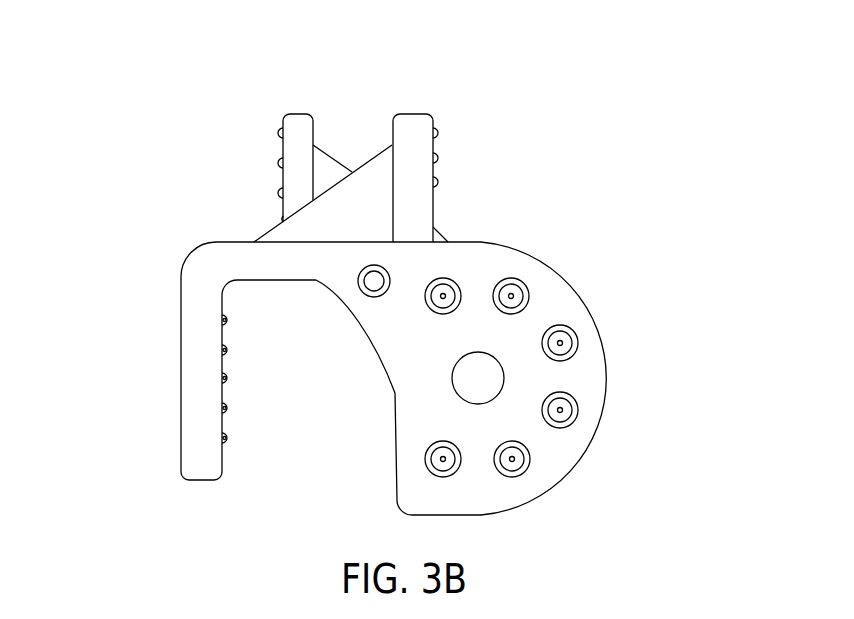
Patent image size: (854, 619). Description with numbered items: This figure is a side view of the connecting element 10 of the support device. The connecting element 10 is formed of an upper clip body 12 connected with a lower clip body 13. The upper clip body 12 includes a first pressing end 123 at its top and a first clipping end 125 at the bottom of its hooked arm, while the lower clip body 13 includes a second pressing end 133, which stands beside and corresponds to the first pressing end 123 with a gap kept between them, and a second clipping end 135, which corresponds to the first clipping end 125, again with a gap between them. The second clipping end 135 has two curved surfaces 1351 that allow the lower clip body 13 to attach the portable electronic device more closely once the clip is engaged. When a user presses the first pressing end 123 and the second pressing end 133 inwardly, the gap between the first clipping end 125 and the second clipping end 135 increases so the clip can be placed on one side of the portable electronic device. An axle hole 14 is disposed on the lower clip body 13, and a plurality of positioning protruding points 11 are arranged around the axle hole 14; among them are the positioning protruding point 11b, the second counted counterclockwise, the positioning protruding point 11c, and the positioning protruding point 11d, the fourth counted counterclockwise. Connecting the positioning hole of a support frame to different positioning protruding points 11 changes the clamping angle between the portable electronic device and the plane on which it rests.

The connecting element 10 is at (118, 183).
The positioning protruding points 11 is at (591, 354).
The positioning protruding point 11b is at (515, 459).
The positioning protruding point 11c is at (563, 408).
The positioning protruding point 11d is at (560, 343).
The upper clip body 12 is at (180, 368).
The first clipping end 125 is at (200, 462).
The lower clip body 13 is at (602, 311).
The second clipping end 135 is at (405, 480).
The curved surfaces 1351 is at (390, 382).
The axle hole 14 is at (462, 382).
The first pressing end 123 is at (410, 135).
The second pressing end 133 is at (298, 127).